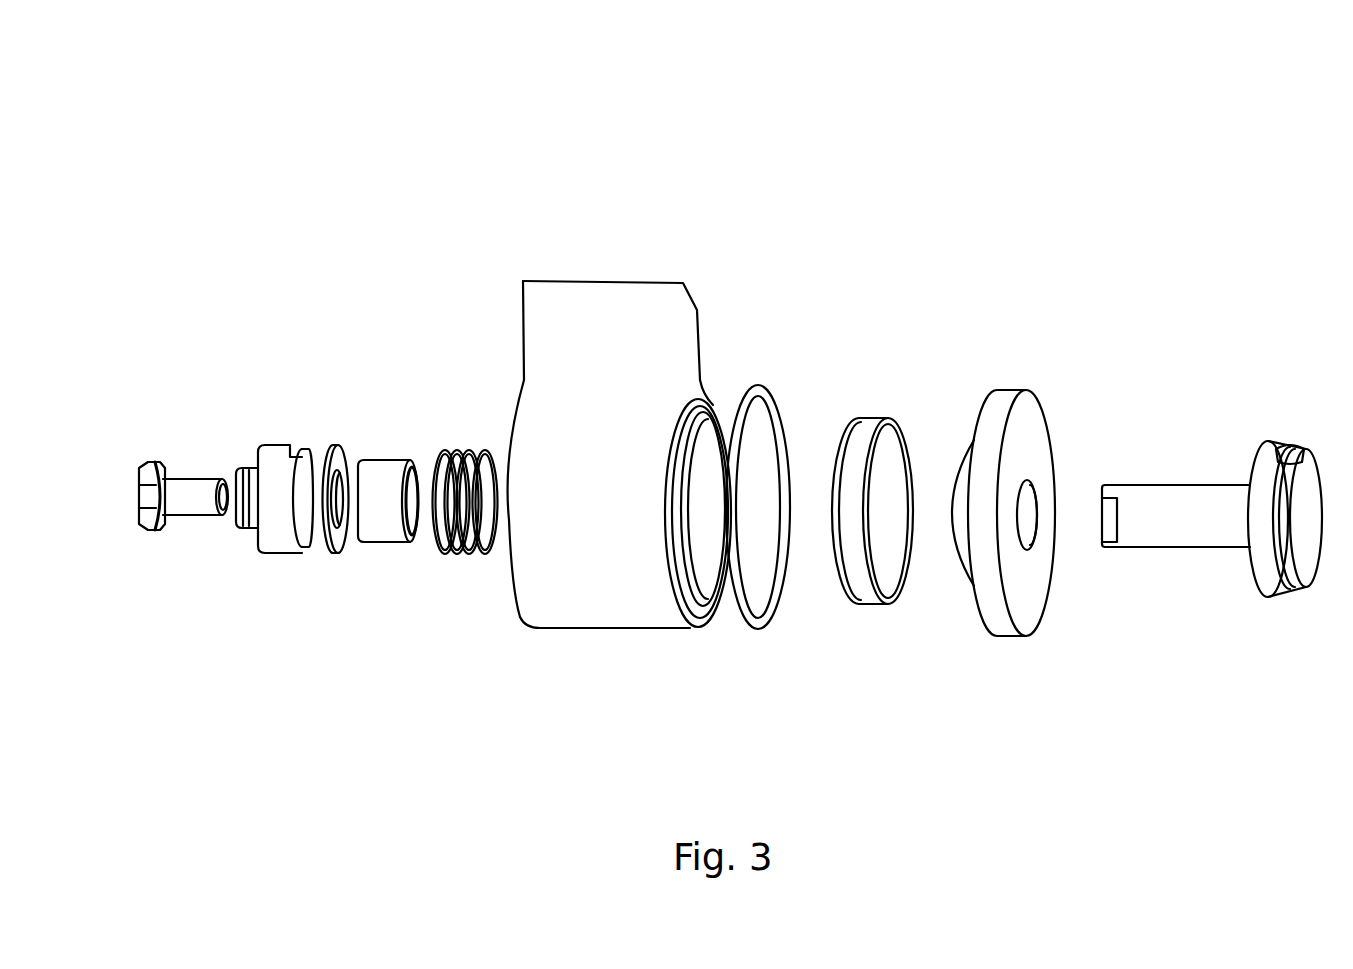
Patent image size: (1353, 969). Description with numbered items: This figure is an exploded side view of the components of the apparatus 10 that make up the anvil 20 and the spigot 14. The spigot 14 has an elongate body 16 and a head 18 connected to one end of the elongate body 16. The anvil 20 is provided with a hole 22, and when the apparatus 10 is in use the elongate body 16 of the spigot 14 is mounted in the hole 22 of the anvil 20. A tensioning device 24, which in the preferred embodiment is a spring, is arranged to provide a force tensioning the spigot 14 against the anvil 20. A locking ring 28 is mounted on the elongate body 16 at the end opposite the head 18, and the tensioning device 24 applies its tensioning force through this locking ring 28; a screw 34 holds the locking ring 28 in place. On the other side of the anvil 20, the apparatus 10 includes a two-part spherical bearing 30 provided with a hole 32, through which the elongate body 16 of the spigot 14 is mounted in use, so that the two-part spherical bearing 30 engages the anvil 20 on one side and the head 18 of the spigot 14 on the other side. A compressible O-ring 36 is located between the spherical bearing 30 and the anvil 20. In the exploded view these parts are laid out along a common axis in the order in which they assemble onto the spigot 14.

The apparatus 10 is at (466, 200).
The spigot 14 is at (1227, 549).
The elongate body 16 is at (1180, 498).
The head 18 is at (1277, 460).
The anvil 20 is at (649, 468).
The hole 22 is at (699, 563).
The tensioning device 24 is at (449, 555).
The locking ring 28 is at (282, 452).
The two-part spherical bearing 30 is at (865, 430).
The hole 32 is at (1037, 549).
The screw 34 is at (187, 485).
The O-ring 36 is at (763, 387).